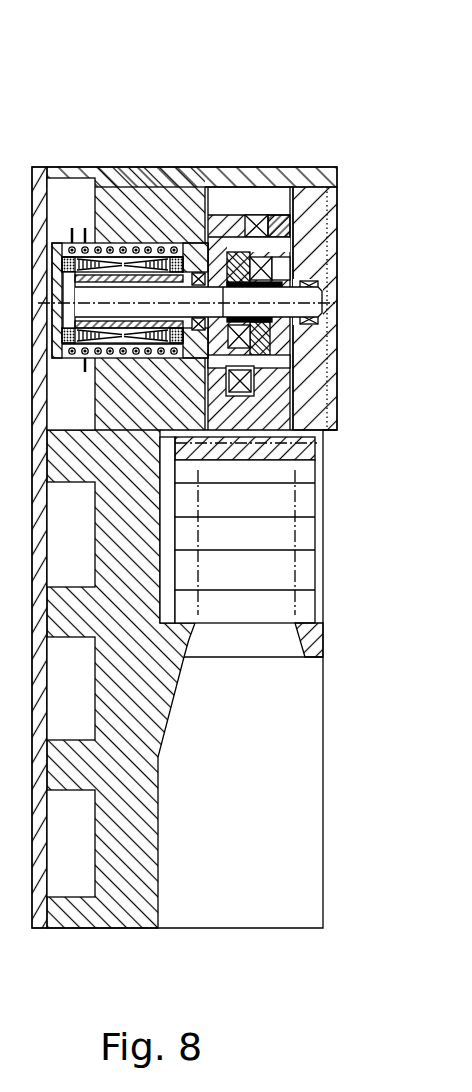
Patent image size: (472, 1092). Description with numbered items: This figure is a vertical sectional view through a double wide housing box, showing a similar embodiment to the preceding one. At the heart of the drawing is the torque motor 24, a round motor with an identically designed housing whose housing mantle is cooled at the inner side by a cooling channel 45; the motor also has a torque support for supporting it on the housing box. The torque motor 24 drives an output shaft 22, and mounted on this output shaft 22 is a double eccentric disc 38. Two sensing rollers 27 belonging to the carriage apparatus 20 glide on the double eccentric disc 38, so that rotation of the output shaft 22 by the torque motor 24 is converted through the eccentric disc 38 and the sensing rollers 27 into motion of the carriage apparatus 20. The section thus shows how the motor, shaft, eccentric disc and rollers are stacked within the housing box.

The carriage apparatus 20 is at (260, 410).
The output shaft 22 is at (318, 312).
The torque motor 24 is at (150, 189).
The sensing rollers 27 is at (252, 388).
The double eccentric disc 38 is at (294, 292).
The cooling channel 45 is at (128, 243).